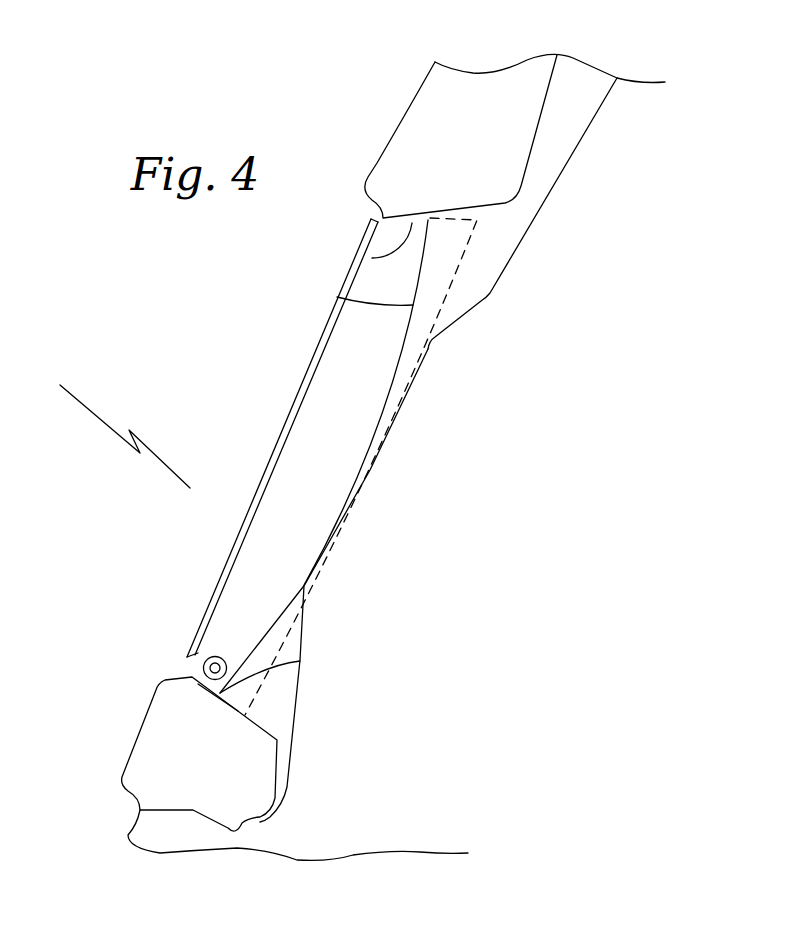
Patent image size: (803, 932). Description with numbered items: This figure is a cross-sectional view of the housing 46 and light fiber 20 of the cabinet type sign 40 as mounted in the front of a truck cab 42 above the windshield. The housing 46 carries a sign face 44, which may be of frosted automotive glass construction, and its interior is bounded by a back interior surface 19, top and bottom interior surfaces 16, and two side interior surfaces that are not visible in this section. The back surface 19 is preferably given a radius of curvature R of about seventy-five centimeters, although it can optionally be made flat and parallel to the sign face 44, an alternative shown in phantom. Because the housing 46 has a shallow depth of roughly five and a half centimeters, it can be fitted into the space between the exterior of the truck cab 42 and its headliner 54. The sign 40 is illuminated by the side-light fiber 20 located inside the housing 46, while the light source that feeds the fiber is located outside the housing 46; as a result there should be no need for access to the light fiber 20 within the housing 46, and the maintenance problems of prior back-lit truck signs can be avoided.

The top and bottom interior surfaces 16 is at (372, 258).
The back interior surface 19 is at (337, 297).
The side-light fiber 20 is at (217, 657).
The cabinet type sign 40 is at (271, 449).
The truck cab 42 is at (407, 563).
The sign face 44 is at (225, 558).
The housing 46 is at (282, 422).
The headliner 54 is at (512, 262).
The radius of curvature R is at (300, 590).